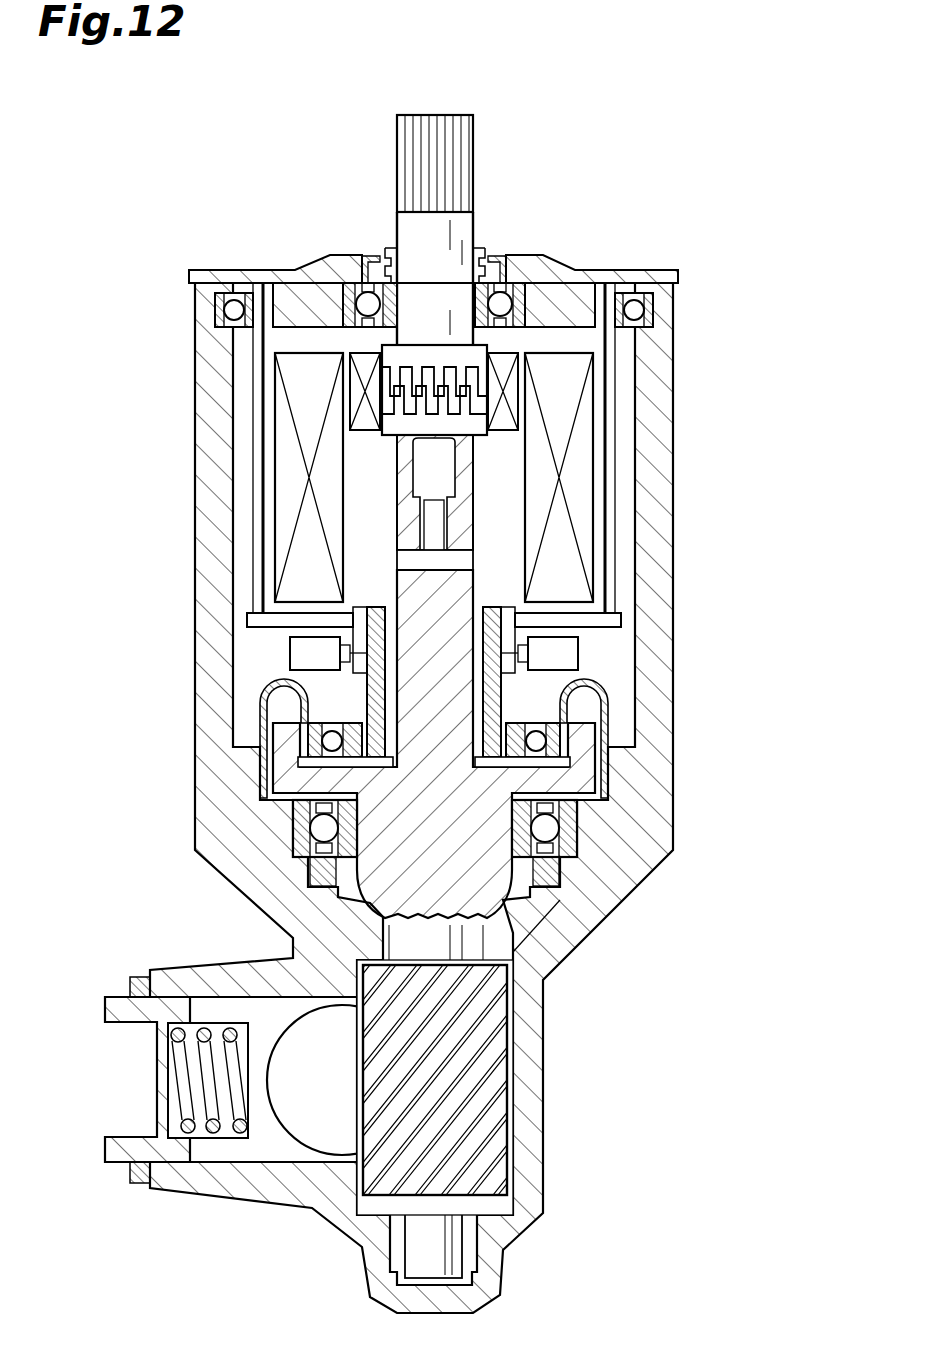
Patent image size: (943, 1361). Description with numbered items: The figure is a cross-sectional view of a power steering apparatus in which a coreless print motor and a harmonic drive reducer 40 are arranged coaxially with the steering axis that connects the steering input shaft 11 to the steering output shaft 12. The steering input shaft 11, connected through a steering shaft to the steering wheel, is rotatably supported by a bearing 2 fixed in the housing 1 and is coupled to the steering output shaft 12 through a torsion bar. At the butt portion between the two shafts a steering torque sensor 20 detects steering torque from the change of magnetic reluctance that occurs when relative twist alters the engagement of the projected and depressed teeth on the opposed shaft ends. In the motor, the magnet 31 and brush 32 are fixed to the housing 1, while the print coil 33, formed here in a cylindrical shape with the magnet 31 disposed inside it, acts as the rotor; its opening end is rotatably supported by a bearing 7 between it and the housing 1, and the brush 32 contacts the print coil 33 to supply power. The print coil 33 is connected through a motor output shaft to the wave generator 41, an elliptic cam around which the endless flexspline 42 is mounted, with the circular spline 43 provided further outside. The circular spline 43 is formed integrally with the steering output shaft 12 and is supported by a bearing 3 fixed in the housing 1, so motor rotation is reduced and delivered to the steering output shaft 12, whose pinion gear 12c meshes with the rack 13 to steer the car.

The housing 1 is at (673, 332).
The bearing 2 is at (500, 300).
The bearing 3 is at (318, 835).
The bearing 7 is at (234, 300).
The steering input shaft 11 is at (473, 165).
The steering output shaft 12 is at (545, 930).
The pinion gear 12c is at (482, 1118).
The rack 13 is at (307, 1132).
The steering torque sensor 20 is at (355, 343).
The magnet 31 is at (285, 435).
The brush 32 is at (315, 653).
The print coil 33 is at (258, 525).
The harmonic drive reducer 40 is at (258, 775).
The wave generator 41 is at (518, 738).
The flexspline 42 is at (610, 764).
The circular spline 43 is at (596, 772).